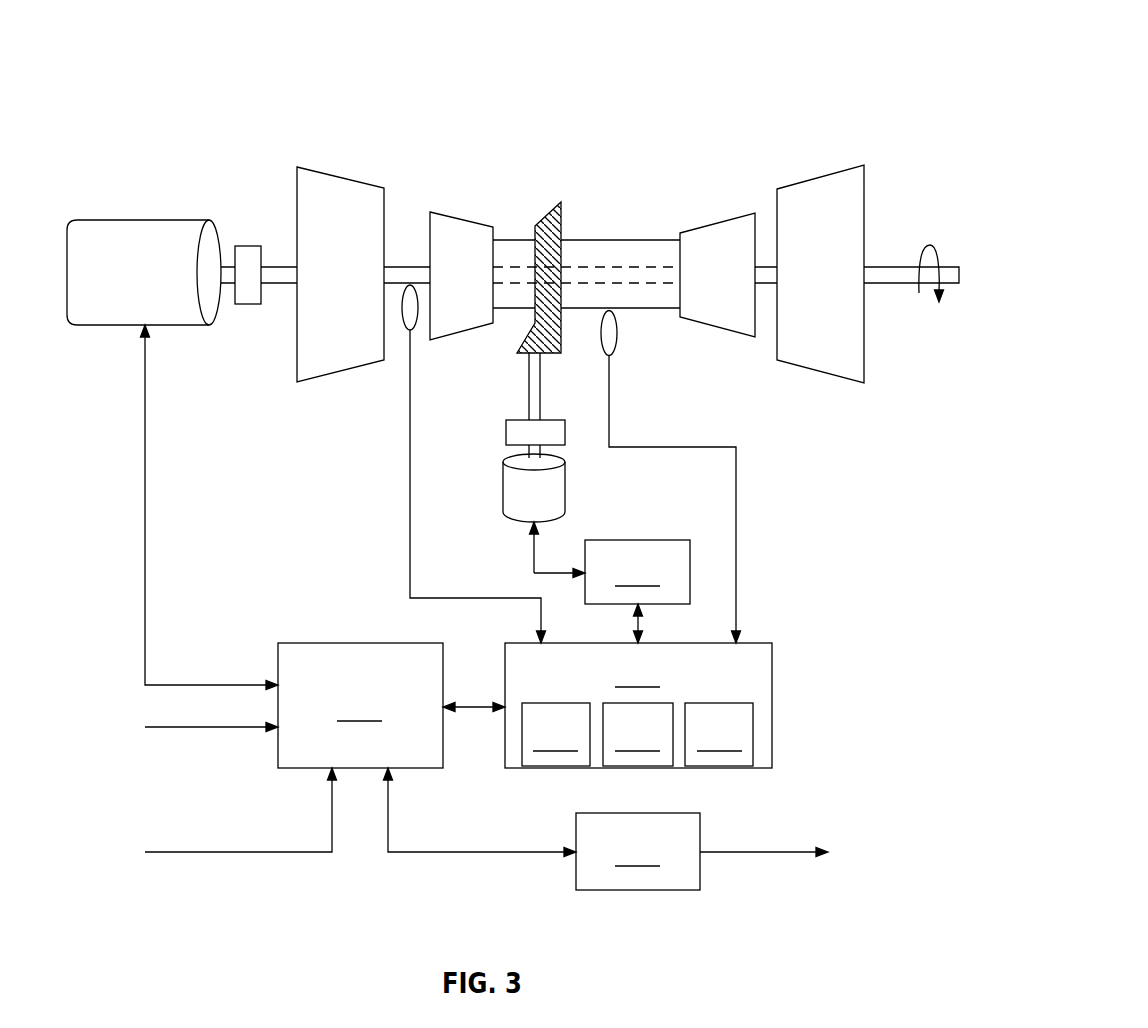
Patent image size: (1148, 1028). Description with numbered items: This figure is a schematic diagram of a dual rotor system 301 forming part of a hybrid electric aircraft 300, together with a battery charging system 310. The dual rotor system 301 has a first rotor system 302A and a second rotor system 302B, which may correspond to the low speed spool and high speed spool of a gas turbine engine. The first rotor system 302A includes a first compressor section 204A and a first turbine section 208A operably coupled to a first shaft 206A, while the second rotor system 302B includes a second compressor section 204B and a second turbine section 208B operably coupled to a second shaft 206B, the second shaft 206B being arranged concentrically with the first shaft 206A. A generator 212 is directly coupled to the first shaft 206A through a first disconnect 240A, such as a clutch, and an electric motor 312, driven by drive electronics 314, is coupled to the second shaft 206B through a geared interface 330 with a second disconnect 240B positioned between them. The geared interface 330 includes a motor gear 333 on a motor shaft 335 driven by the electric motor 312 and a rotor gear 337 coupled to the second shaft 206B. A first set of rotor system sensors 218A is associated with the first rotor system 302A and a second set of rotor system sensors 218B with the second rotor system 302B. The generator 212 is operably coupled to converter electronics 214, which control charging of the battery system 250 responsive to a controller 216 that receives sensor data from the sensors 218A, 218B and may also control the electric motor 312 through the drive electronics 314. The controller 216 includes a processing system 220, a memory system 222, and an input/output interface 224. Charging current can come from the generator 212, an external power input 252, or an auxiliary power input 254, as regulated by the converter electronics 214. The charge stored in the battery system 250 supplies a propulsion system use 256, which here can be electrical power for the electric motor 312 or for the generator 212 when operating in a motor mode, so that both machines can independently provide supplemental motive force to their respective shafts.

The hybrid electric aircraft 300 is at (132, 38).
The dual rotor system 301 is at (690, 126).
The generator 212 is at (112, 220).
The first disconnect 240A is at (252, 246).
The first shaft 206A is at (278, 267).
The first compressor section 204A is at (332, 174).
The first rotor system 302A is at (290, 350).
The first set of one or more rotor system sensors 218A is at (402, 310).
The second compressor section 204B is at (462, 214).
The geared interface 330 is at (514, 189).
The rotor gear 337 is at (556, 208).
The motor gear 333 is at (518, 352).
The motor shaft 335 is at (530, 382).
The second disconnect 240B is at (518, 430).
The electric motor 312 is at (516, 498).
The drive electronics 314 is at (637, 591).
The second shaft 206B is at (590, 240).
The second set of one or more rotor system sensors 218B is at (618, 346).
The second turbine section 208B is at (713, 228).
The second rotor system 302B is at (742, 355).
The first turbine section 208A is at (815, 179).
The battery charging system 310 is at (126, 650).
The auxiliary power input 254 is at (213, 728).
The power input 252 is at (243, 852).
The converter electronics 214 is at (427, 750).
The controller 216 is at (638, 705).
The processing system 220 is at (556, 734).
The memory system 222 is at (638, 734).
The input/output interface 224 is at (719, 734).
The battery system 250 is at (638, 851).
The propulsion system use 256 is at (740, 852).